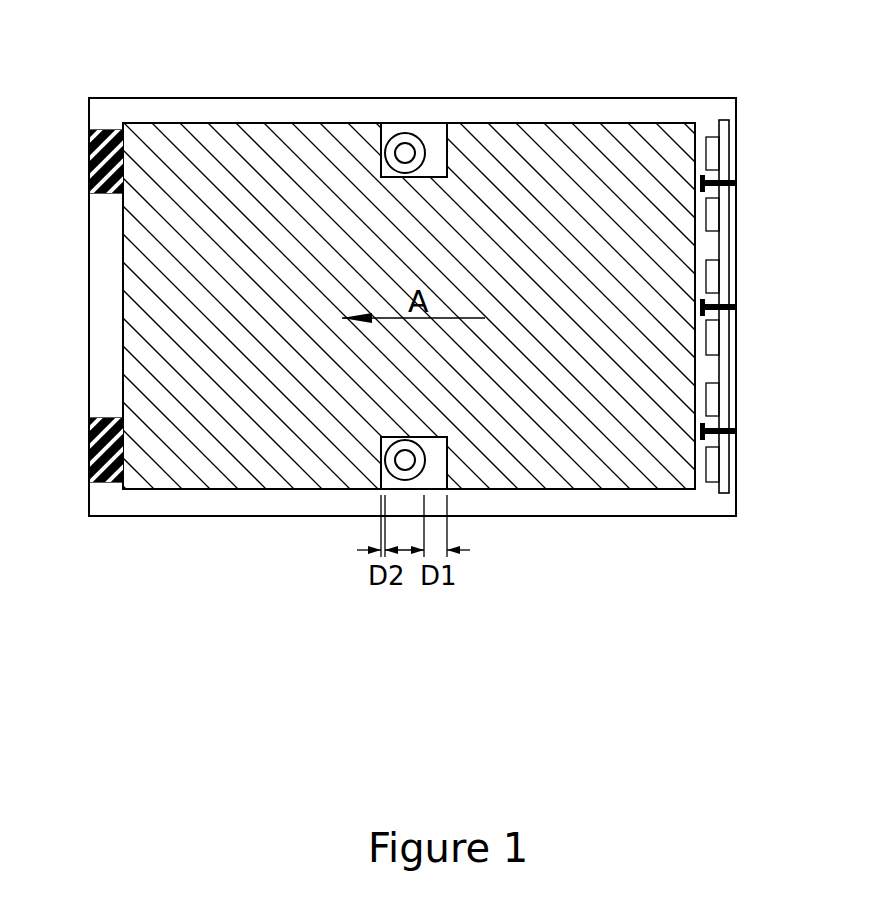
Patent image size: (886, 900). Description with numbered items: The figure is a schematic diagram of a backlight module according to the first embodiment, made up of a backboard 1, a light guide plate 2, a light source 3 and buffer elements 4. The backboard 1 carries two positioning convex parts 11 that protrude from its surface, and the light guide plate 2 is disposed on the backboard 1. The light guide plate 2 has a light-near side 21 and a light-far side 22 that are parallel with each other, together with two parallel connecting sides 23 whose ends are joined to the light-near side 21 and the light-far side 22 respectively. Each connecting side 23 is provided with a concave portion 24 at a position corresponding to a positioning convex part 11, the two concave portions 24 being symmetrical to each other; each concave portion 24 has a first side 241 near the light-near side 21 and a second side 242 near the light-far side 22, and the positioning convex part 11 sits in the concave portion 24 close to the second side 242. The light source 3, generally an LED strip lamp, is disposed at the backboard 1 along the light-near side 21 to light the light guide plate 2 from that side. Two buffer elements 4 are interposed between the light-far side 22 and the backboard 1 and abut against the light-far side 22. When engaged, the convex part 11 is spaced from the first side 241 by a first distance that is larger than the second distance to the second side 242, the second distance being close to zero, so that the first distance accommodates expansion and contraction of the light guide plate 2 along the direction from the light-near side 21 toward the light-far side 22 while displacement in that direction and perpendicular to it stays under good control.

The backboard 1 is at (712, 110).
The light guide plate 2 is at (659, 130).
The light source 3 is at (708, 273).
The buffer element 4 is at (90, 165).
The positioning convex part 11 is at (405, 153).
The light-near side 21 is at (695, 367).
The light-far side 22 is at (123, 235).
The connecting side 23 is at (575, 124).
The concave portion 24 is at (435, 140).
The first side 241 is at (447, 157).
The second side 242 is at (381, 140).